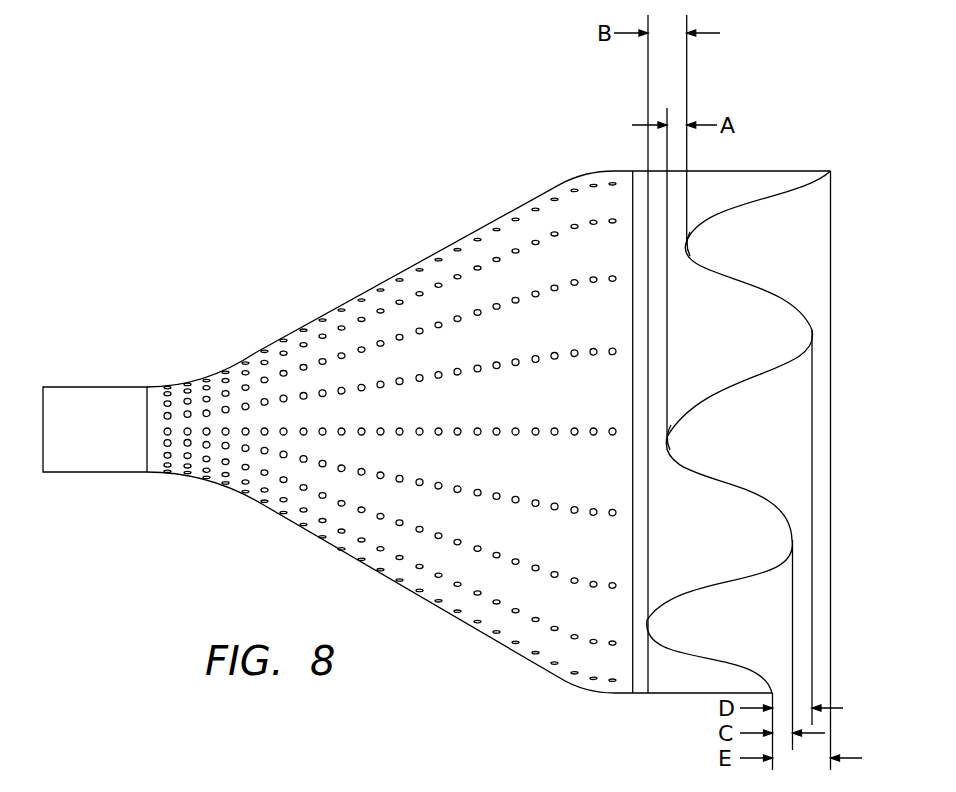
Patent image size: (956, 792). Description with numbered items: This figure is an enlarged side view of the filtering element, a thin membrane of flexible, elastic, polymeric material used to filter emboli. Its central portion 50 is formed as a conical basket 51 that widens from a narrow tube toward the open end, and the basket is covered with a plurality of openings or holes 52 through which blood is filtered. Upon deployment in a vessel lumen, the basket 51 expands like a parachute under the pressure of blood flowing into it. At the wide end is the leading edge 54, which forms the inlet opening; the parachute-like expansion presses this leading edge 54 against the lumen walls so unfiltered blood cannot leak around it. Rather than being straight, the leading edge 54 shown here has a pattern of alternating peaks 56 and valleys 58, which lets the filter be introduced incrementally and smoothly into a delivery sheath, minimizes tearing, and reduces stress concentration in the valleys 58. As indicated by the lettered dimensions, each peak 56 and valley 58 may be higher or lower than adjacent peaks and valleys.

The central portion 50 is at (489, 441).
The conical basket 51 is at (360, 340).
The openings or holes 52 is at (494, 603).
The leading edge 54 is at (739, 392).
The peaks 56 is at (783, 342).
The valleys 58 is at (687, 246).